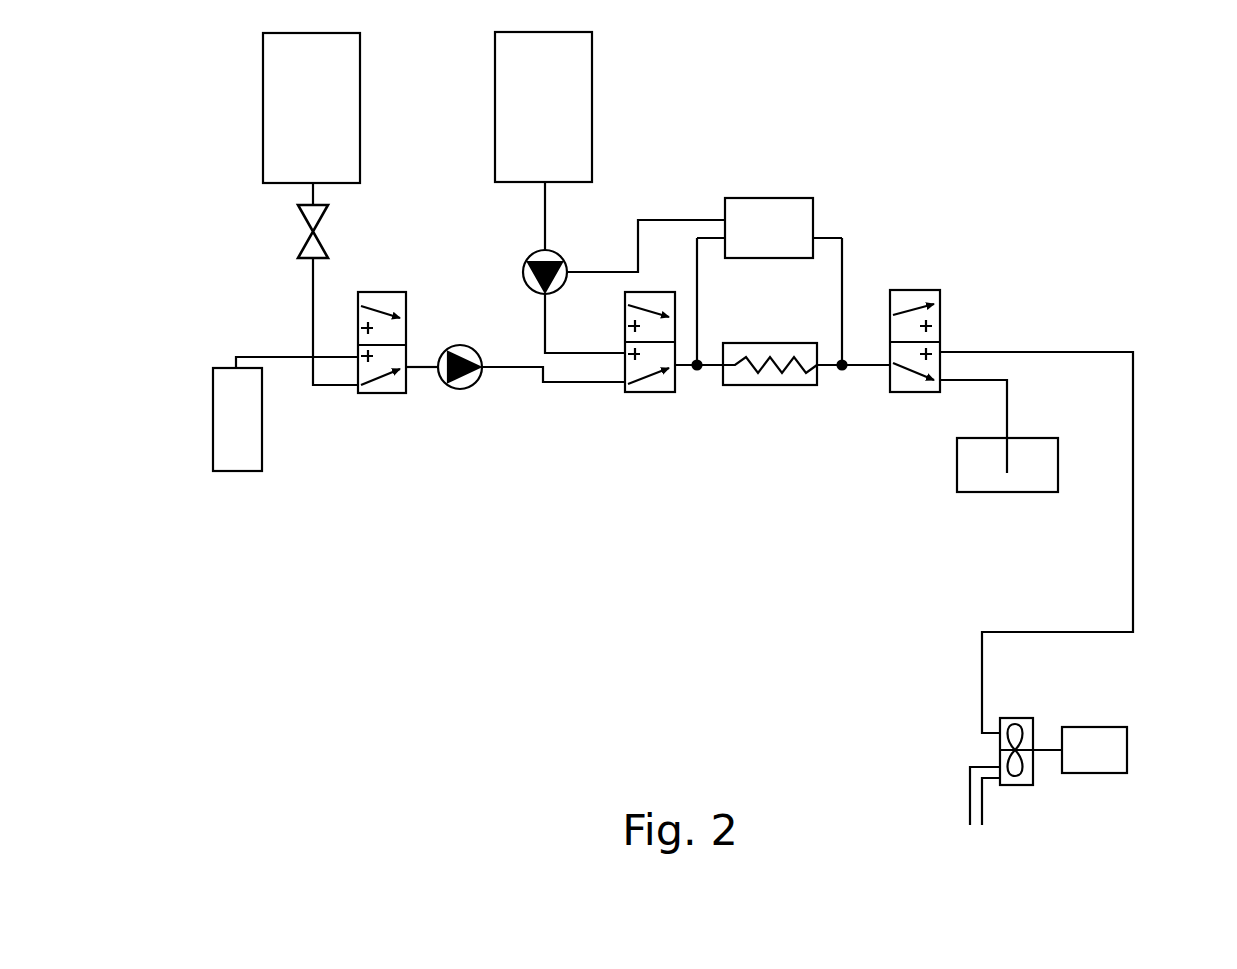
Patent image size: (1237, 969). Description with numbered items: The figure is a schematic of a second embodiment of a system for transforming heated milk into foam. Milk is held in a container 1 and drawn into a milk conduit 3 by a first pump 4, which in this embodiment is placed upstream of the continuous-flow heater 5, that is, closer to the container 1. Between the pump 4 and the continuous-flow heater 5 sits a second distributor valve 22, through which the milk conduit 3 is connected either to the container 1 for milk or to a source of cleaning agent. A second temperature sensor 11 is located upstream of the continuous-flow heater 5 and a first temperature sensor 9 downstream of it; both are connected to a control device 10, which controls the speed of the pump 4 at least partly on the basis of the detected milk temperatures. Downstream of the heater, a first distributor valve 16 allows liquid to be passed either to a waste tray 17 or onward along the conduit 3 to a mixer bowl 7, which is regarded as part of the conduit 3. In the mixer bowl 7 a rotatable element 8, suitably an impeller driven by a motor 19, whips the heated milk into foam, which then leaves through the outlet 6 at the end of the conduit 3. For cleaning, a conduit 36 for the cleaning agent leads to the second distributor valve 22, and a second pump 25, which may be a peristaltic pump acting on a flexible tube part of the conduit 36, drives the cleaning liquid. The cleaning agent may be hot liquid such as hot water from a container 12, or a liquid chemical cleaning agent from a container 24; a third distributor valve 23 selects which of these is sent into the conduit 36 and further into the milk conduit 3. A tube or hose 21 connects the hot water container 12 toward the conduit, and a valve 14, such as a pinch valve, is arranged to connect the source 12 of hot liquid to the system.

The container for milk 1 is at (592, 58).
The milk conduit 3 is at (1082, 350).
The pump 4 is at (522, 280).
The continuous-flow heater 5 is at (770, 387).
The outlet 6 is at (970, 825).
The mixer bowl 7 is at (1020, 717).
The rotatable element 8 is at (1003, 752).
The first temperature sensor 9 is at (842, 375).
The control device 10 is at (800, 198).
The second temperature sensor 11 is at (697, 375).
The container for hot liquid 12 is at (263, 93).
The valve 14 is at (300, 225).
The first distributor valve 16 is at (915, 290).
The waste tray 17 is at (972, 493).
The motor 19 is at (1127, 745).
The tube or hose 21 is at (310, 313).
The second distributor valve 22 is at (633, 395).
The third distributor valve 23 is at (367, 396).
The container for liquid chemical cleaning agent 24 is at (236, 472).
The second pump 25 is at (460, 390).
The conduit for cleaning agent 36 is at (548, 386).